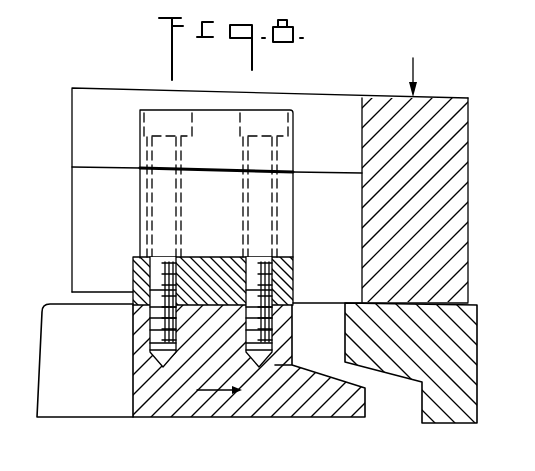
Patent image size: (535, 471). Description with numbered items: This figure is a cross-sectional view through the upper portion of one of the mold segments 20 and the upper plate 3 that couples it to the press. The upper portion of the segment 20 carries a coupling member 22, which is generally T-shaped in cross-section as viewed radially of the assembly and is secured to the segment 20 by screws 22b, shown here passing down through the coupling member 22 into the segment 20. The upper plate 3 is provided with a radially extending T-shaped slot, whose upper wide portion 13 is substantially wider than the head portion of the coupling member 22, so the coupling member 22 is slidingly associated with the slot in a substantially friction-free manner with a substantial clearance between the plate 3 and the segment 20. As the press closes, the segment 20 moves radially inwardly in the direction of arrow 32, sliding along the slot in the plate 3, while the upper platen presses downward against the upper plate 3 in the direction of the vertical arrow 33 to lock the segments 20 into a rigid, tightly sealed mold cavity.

The upper plate 3 is at (72, 172).
The upper wide portion 13 is at (86, 95).
The segment 20 is at (153, 403).
The coupling member 22 is at (221, 207).
The screw 22b is at (288, 137).
The arrow 32 is at (208, 390).
The force arrow 33 is at (418, 63).